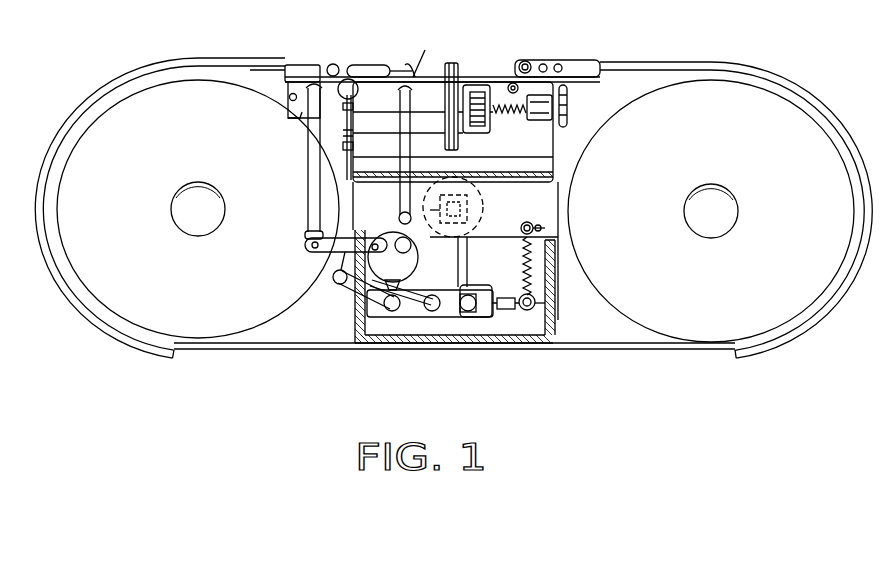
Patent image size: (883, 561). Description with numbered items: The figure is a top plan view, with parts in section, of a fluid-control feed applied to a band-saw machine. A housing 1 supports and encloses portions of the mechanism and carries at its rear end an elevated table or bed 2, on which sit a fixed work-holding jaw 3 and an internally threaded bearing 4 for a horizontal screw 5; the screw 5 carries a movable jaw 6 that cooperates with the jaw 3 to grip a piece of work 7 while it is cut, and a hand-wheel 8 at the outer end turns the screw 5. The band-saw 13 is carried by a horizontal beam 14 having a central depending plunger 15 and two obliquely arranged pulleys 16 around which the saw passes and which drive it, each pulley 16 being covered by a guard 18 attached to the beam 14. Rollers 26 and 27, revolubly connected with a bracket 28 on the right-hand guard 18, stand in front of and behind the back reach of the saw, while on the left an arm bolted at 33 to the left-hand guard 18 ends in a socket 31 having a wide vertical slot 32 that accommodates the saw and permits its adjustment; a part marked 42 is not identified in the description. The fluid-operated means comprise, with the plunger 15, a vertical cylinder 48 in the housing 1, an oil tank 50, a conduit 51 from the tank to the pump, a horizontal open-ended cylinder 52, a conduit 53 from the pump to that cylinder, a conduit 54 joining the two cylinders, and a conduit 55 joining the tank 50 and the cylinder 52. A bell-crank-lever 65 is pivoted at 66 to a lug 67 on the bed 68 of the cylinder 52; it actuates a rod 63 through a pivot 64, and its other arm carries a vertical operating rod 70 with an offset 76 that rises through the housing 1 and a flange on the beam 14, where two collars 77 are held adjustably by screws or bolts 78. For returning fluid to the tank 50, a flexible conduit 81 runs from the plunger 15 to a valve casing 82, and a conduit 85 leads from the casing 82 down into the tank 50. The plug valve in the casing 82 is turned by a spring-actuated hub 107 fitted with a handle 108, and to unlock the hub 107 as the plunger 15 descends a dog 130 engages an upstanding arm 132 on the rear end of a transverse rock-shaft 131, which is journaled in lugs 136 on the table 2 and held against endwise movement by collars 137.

The housing 1 is at (541, 343).
The elevated table or bed 2 is at (453, 132).
The fixed work-holding member or jaw 3 is at (425, 64).
The internally screw-threaded bearing 4 is at (540, 120).
The horizontal screw 5 is at (500, 113).
The work-holding member or jaw 6 is at (472, 85).
The piece of work 7 is at (456, 63).
The hand-wheel 8 is at (567, 122).
The band-saw 13 is at (425, 50).
The horizontal beam 14 is at (468, 212).
The central depending plunger 15 is at (468, 212).
The obliquely arranged pulleys 16 is at (455, 211).
The guard 18 is at (77, 117).
The roller 26 is at (513, 82).
The roller 27 is at (530, 62).
The bracket 28 is at (560, 60).
The socket 31 is at (300, 65).
The vertical slot 32 is at (300, 118).
The bolts 33 is at (290, 97).
The roller 42 is at (334, 64).
The vertical cylinder 48 is at (478, 190).
The oil tank 50 is at (418, 257).
The conduit 51 is at (318, 256).
The horizontal open-ended cylinder 52 is at (448, 322).
The conduit 53 is at (345, 290).
The conduit 54 is at (462, 253).
The conduit 55 is at (405, 283).
The rod 63 is at (472, 345).
The pivot 64 is at (500, 322).
The bell-crank-lever 65 is at (553, 312).
The pivot 66 is at (503, 296).
The lug 67 is at (523, 266).
The bed 68 is at (408, 335).
The vertical operating rod 70 is at (539, 225).
The offset 76 is at (555, 275).
The collars 77 is at (521, 228).
The screws or bolts 78 is at (542, 228).
The conduit 81 is at (400, 196).
The valve casing 82 is at (348, 89).
The conduit 85 is at (308, 195).
The spring-actuated hub 107 is at (408, 70).
The handle 108 is at (414, 62).
The dog 130 is at (412, 55).
The horizontal rock-shaft 131 is at (353, 133).
The arm 132 is at (353, 107).
The lugs 136 is at (347, 143).
The collars 137 is at (353, 147).